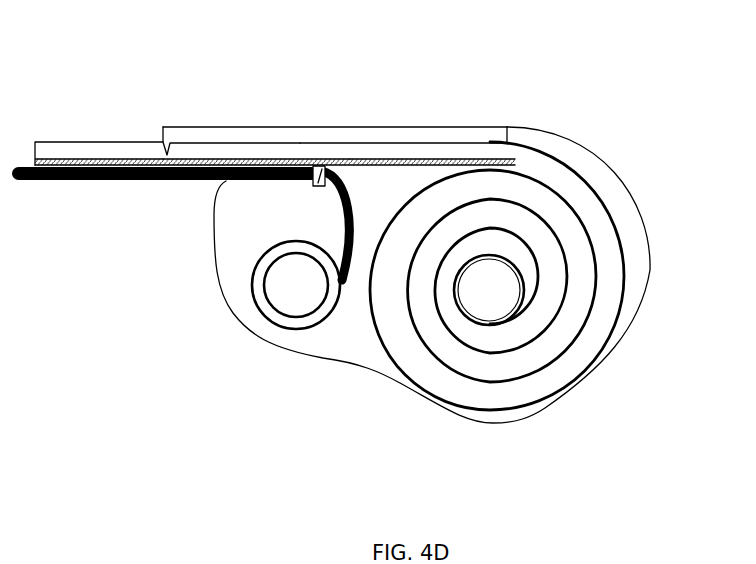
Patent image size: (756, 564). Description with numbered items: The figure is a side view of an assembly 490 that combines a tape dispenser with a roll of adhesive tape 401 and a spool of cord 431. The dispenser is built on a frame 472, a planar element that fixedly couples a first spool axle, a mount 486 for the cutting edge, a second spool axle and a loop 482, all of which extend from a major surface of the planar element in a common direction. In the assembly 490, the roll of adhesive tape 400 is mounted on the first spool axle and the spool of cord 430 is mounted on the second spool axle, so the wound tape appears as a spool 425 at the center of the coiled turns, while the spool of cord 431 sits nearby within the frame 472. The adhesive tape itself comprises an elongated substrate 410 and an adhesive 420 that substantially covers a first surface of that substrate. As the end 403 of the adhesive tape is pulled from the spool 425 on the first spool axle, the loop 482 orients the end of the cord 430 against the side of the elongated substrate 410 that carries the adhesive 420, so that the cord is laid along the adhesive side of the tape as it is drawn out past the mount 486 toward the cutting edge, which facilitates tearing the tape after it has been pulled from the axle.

The assembly 490 is at (182, 96).
The roll of adhesive tape 400 is at (58, 150).
The mount 486 is at (205, 138).
The end of adhesive tape 403 is at (297, 153).
The elongated substrate 410 is at (383, 152).
The adhesive 420 is at (427, 162).
The spool of cord 430 is at (140, 184).
The loop 482 is at (320, 186).
The spool of cord 431 is at (268, 318).
The frame 472 is at (432, 275).
The spool 425 is at (489, 290).
The roll of adhesive tape 401 is at (560, 188).